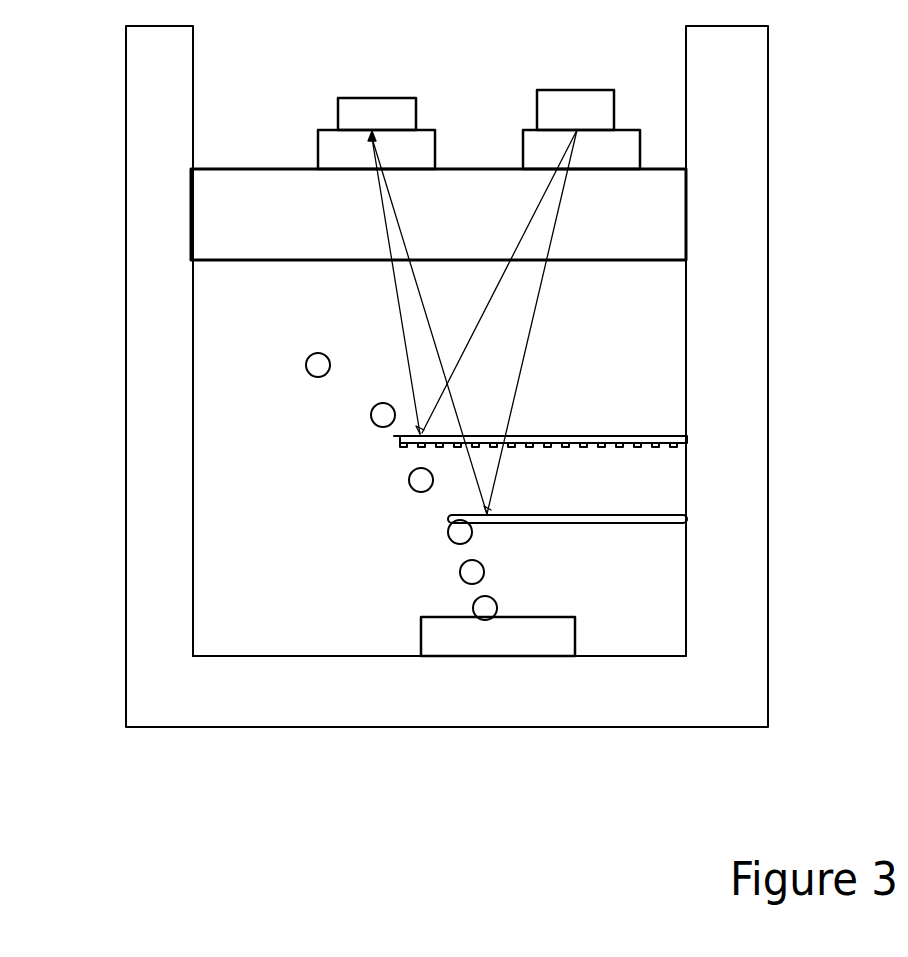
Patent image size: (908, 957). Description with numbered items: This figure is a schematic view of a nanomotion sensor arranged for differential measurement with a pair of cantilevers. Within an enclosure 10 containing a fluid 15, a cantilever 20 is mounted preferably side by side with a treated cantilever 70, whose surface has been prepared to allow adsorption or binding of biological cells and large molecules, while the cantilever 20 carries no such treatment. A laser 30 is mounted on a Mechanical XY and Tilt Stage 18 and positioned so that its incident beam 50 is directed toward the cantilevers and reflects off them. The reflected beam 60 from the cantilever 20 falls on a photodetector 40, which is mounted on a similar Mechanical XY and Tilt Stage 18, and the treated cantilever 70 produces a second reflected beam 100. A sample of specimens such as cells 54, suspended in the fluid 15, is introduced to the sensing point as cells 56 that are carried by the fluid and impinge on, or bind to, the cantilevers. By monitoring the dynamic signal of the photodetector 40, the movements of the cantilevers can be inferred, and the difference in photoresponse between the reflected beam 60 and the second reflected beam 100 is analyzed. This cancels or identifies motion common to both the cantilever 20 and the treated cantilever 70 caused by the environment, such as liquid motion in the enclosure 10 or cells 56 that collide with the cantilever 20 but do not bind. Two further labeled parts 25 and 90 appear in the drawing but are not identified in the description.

The enclosure 10 is at (730, 298).
The fluid 15 is at (288, 517).
The Mechanical XY and Tilt Stage 18 is at (540, 153).
The cantilever 20 is at (688, 518).
The top plate 25 is at (211, 217).
The laser 30 is at (587, 103).
The photodetector 40 is at (392, 103).
The incident beam 50 is at (517, 356).
The cells 54 is at (498, 648).
The cells 56 is at (460, 583).
The reflected beam 60 is at (422, 298).
The treated cantilever 70 is at (658, 452).
The light beam 90 is at (485, 312).
The second reflected beam 100 is at (407, 350).